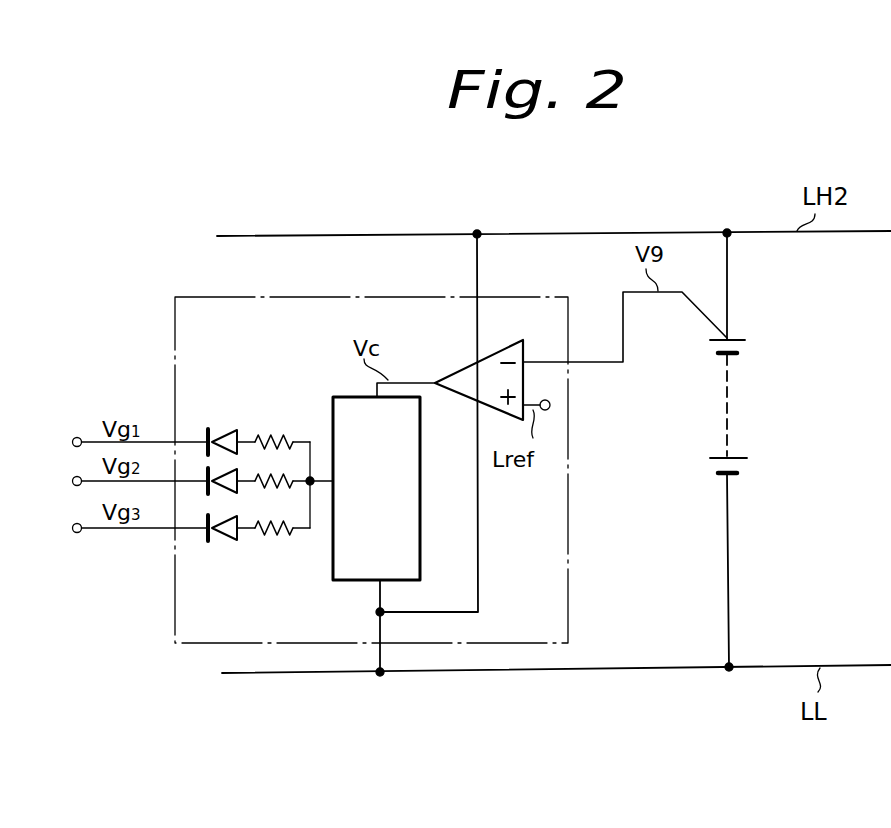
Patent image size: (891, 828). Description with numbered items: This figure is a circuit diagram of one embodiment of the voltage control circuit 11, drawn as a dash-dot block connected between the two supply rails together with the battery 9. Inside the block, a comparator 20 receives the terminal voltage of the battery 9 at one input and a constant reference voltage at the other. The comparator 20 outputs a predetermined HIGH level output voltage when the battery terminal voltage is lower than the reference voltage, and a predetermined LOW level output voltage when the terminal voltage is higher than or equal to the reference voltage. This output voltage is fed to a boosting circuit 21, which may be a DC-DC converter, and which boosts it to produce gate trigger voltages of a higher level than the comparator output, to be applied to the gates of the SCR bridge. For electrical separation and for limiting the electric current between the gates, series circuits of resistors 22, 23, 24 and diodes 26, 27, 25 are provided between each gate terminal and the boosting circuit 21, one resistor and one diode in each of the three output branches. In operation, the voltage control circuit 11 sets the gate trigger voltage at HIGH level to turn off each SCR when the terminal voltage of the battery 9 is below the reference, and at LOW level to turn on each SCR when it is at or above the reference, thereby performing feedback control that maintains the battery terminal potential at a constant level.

The battery 9 is at (730, 405).
The voltage control circuit 11 is at (172, 618).
The comparator 20 is at (466, 367).
The boosting circuit 21 is at (420, 440).
The resistor 22 is at (284, 437).
The resistor 23 is at (277, 484).
The resistor 24 is at (284, 537).
The diode 25 is at (227, 540).
The diode 26 is at (231, 431).
The diode 27 is at (231, 469).